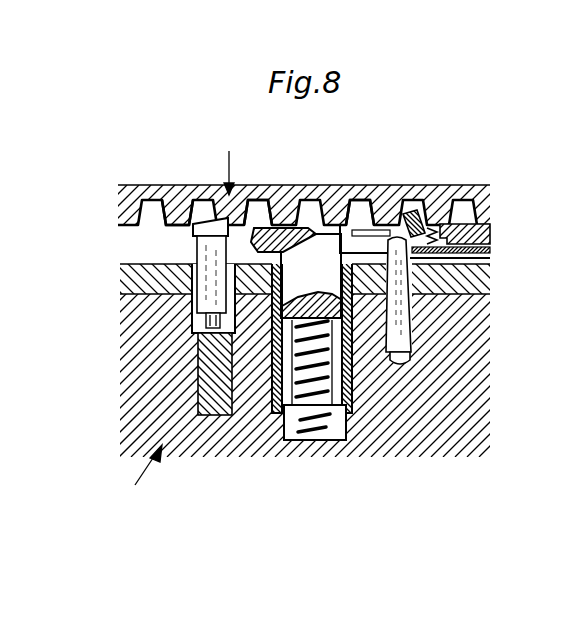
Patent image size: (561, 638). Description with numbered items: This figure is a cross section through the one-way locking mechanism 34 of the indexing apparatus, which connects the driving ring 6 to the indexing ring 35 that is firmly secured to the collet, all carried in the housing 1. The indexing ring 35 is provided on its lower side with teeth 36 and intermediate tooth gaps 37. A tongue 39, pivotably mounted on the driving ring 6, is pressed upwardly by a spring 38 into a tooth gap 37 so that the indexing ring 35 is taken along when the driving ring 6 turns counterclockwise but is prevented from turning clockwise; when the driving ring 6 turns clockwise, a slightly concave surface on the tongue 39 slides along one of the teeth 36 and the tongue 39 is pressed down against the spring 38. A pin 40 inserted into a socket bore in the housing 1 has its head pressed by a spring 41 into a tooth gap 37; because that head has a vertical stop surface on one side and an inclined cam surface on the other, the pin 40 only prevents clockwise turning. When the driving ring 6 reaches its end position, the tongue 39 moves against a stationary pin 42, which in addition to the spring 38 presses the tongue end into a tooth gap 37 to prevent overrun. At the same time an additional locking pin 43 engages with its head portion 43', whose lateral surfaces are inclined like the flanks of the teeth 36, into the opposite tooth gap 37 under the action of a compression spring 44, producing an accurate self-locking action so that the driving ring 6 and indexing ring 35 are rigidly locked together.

The housing 1 is at (427, 430).
The tooth gaps 37 is at (150, 210).
The teeth 36 is at (175, 194).
The indexing ring 35 is at (227, 162).
The driving ring 6 is at (275, 224).
The pin 40 is at (212, 248).
The spring 41 is at (215, 362).
The locking pin 43 is at (310, 265).
The head portion 43' is at (283, 202).
The spring 44 is at (305, 433).
The tongue 39 is at (412, 233).
The stationary pin 42 is at (428, 228).
The spring 38 is at (474, 191).
The one-way locking mechanism 34 is at (137, 479).